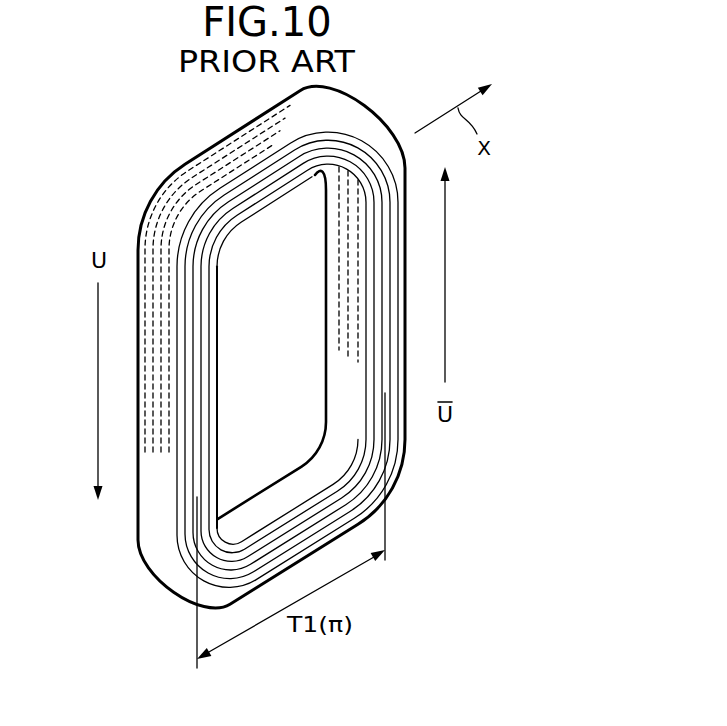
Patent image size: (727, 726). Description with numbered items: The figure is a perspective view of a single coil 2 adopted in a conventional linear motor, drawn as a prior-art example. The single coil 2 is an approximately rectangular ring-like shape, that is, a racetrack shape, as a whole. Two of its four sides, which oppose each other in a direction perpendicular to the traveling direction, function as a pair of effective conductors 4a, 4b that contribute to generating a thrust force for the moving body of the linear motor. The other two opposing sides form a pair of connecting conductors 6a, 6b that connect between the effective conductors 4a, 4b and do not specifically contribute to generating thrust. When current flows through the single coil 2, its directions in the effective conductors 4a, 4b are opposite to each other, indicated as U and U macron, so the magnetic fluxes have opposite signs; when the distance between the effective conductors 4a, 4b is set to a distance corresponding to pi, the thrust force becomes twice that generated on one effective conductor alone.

The single coil 2 is at (176, 124).
The effective conductor 4a is at (200, 358).
The effective conductor 4b is at (341, 304).
The connecting conductor 6a is at (293, 188).
The connecting conductor 6b is at (262, 508).